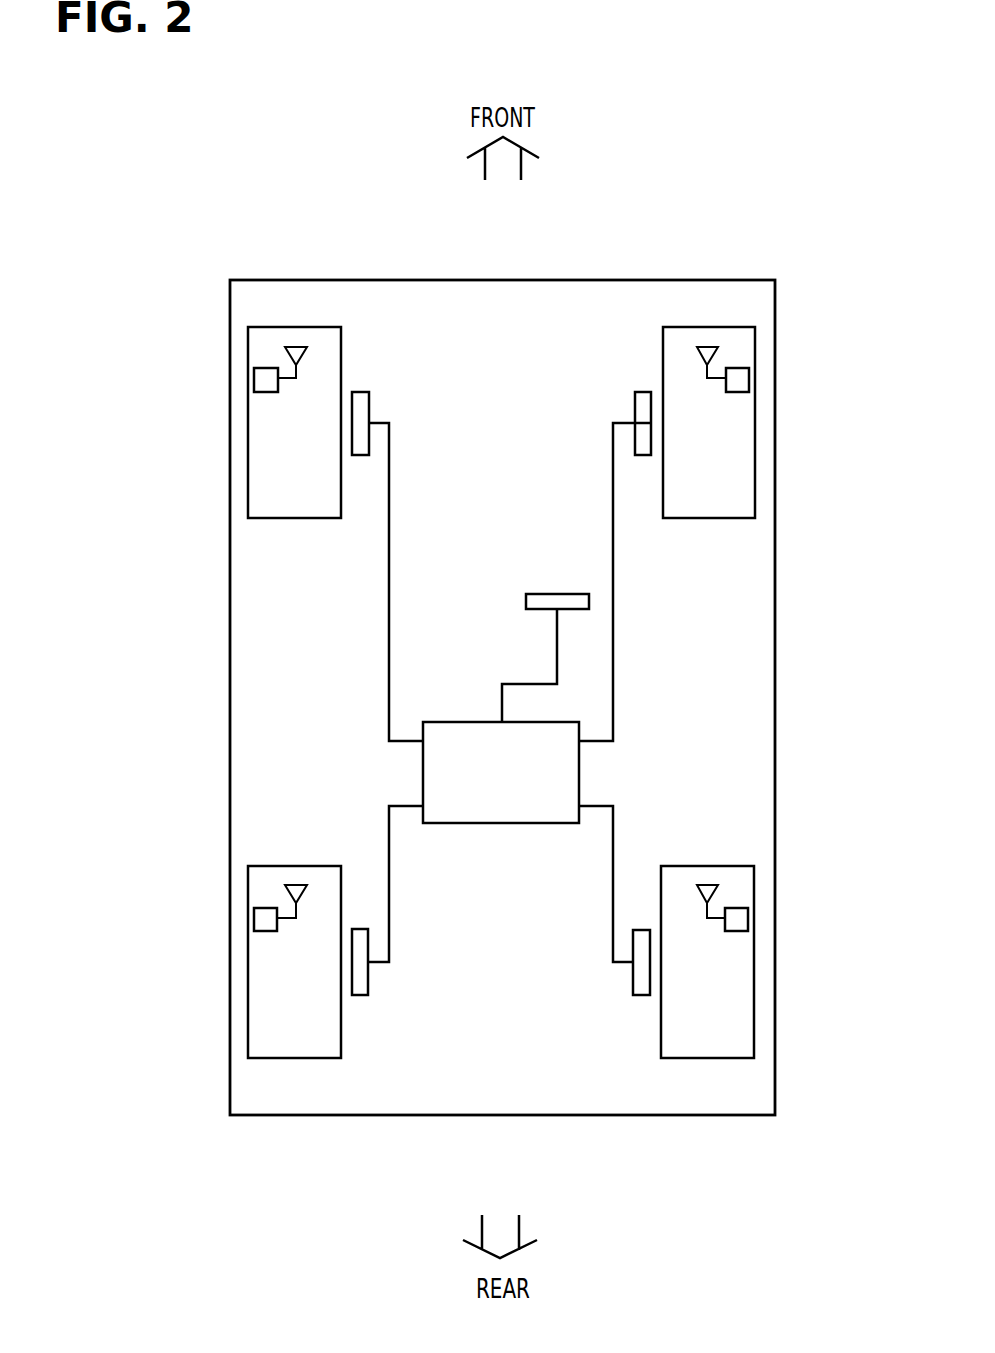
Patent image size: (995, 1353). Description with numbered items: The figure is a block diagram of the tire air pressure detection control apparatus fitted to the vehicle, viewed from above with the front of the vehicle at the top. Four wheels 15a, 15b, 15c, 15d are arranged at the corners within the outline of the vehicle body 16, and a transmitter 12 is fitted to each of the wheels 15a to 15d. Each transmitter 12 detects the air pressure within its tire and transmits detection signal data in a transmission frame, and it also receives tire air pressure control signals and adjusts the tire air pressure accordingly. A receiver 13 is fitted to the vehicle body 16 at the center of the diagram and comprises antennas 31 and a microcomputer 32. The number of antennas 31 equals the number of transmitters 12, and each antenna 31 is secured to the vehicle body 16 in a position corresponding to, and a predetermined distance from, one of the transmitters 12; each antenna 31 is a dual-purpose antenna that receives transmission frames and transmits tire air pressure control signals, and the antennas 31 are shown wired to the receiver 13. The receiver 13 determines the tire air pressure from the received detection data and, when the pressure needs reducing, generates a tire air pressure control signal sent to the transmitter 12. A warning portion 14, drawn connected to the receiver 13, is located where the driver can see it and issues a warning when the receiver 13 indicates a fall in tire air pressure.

The transmitter 12 is at (254, 378).
The receiver 13 is at (462, 828).
The warning portion 14 is at (580, 610).
The wheel 15a is at (755, 466).
The wheel 15b is at (248, 456).
The wheel 15c is at (755, 1010).
The wheel 15d is at (248, 995).
The vehicle body 16 is at (776, 558).
The antenna 31 is at (363, 391).
The microcomputer 32 is at (556, 825).